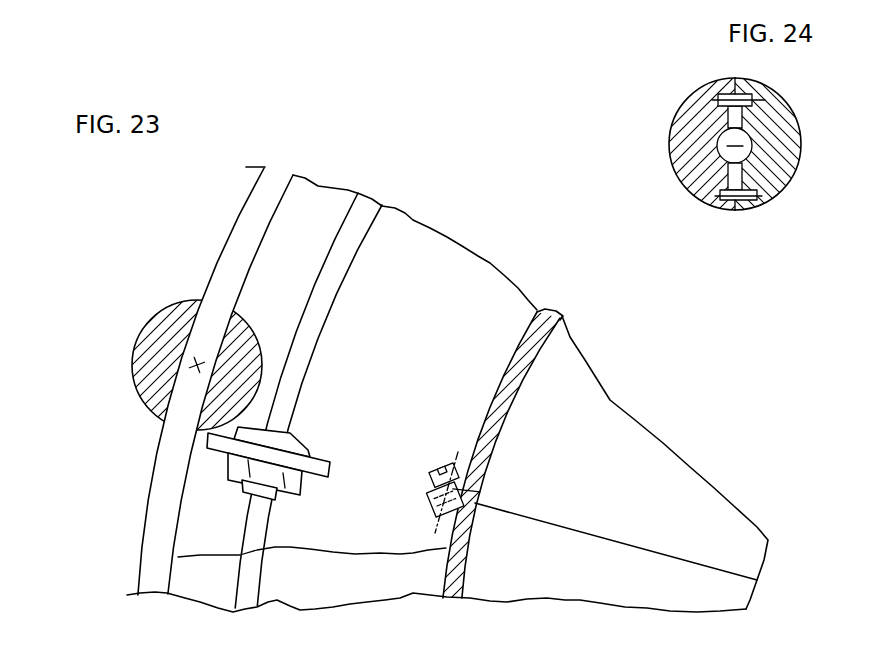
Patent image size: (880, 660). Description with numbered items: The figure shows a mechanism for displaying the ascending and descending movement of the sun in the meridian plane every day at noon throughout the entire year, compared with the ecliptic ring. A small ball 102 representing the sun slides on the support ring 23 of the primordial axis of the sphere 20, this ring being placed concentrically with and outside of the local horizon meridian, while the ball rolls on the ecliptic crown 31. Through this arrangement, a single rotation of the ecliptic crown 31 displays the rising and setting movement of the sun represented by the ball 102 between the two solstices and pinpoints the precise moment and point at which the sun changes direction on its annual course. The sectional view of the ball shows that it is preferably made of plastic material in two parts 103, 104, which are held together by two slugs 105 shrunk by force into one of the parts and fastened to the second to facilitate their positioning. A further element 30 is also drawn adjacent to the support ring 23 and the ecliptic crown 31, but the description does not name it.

In FIG. 23, the sphere 20 is at (178, 557).
In FIG. 23, the support ring 23 is at (233, 248).
In FIG. 23, the guide rail 30 is at (247, 522).
In FIG. 23, the ecliptic crown 31 is at (222, 451).
In FIG. 23, the small ball 102 is at (155, 335).
In FIG. 24, the first part 103 is at (693, 183).
In FIG. 24, the second part 104 is at (773, 183).
In FIG. 24, the slugs 105 is at (737, 200).